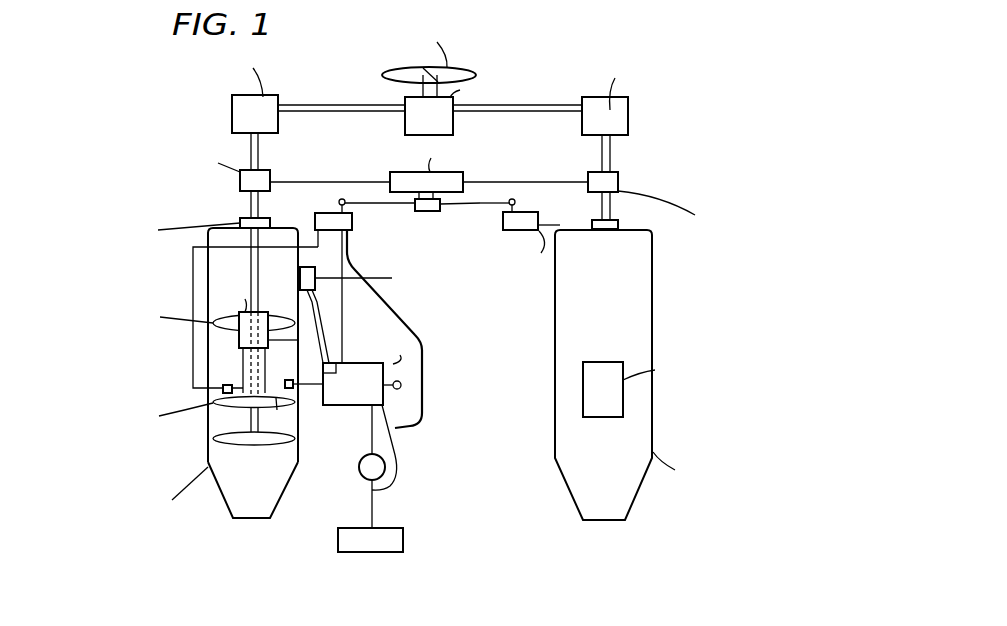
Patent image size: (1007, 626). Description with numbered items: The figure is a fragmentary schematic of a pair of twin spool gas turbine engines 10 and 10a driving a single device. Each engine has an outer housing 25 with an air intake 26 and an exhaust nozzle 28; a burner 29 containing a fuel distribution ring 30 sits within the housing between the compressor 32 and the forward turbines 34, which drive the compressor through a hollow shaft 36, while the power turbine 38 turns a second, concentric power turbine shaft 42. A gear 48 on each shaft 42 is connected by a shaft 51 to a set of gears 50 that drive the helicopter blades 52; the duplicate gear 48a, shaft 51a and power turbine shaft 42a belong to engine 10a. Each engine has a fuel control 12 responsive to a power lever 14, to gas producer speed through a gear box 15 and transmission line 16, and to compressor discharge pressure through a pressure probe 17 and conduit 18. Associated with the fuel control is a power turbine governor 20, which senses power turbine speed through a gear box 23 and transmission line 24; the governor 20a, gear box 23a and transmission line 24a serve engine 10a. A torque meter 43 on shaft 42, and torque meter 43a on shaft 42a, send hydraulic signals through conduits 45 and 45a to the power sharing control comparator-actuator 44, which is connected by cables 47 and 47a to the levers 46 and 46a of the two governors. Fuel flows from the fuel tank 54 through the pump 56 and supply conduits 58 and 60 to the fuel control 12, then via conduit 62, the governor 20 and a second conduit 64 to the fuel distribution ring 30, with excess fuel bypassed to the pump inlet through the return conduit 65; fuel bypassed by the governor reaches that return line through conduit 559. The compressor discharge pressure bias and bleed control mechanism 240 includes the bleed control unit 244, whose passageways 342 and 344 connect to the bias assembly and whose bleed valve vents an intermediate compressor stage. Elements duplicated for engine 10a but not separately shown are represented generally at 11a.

The gas turbine engine 10 is at (176, 396).
The gas turbine engine 10a is at (700, 381).
The fuel control and associated structure 11a is at (603, 418).
The fuel control 12 is at (393, 407).
The power lever 14 is at (401, 387).
The gear box 15 is at (240, 341).
The transmission line 16 is at (284, 343).
The pressure probe 17 is at (280, 416).
The conduit 18 is at (308, 388).
The power turbine governor 20 is at (352, 221).
The power turbine governor 20a is at (512, 250).
The gear box 23 is at (240, 220).
The gear box 23a is at (620, 221).
The transmission line 24 is at (298, 224).
The transmission line 24a is at (560, 225).
The outer housing 25 is at (240, 334).
The air intake 26 is at (209, 233).
The exhaust nozzle 28 is at (223, 500).
The burner 29 is at (220, 397).
The fuel distribution ring 30 is at (229, 380).
The compressor 32 is at (238, 316).
The forward turbines 34 is at (280, 379).
The hollow shaft 36 is at (240, 363).
The power turbine 38 is at (213, 442).
The power turbine shaft 42 is at (250, 141).
The power turbine shaft 42a is at (611, 157).
The torque meter 43 is at (240, 179).
The torque meter 43a is at (620, 182).
The power sharing control comparator-actuator 44 is at (410, 172).
The conduit 45 is at (355, 180).
The conduit 45a is at (523, 182).
The lever 46 is at (339, 202).
The lever 46a is at (514, 201).
The cable 47 is at (377, 205).
The cable 47a is at (492, 204).
The gear 48 is at (232, 112).
The gear 48a is at (628, 118).
The set of gears 50 is at (405, 98).
The shaft 51 is at (342, 103).
The shaft 51a is at (527, 103).
The helicopter blades 52 is at (455, 72).
The fuel tank 54 is at (380, 552).
The pump 56 is at (360, 477).
The supply conduit 58 is at (375, 507).
The supply conduit 60 is at (371, 431).
The conduit 62 is at (345, 322).
The second conduit 64 is at (193, 290).
The return conduit 65 is at (390, 440).
The compressor discharge pressure bias and bleed control mechanism 240 is at (337, 381).
The bleed control unit 244 is at (366, 279).
The passageway 342 is at (311, 318).
The passageway 344 is at (318, 328).
The conduit 559 is at (425, 348).